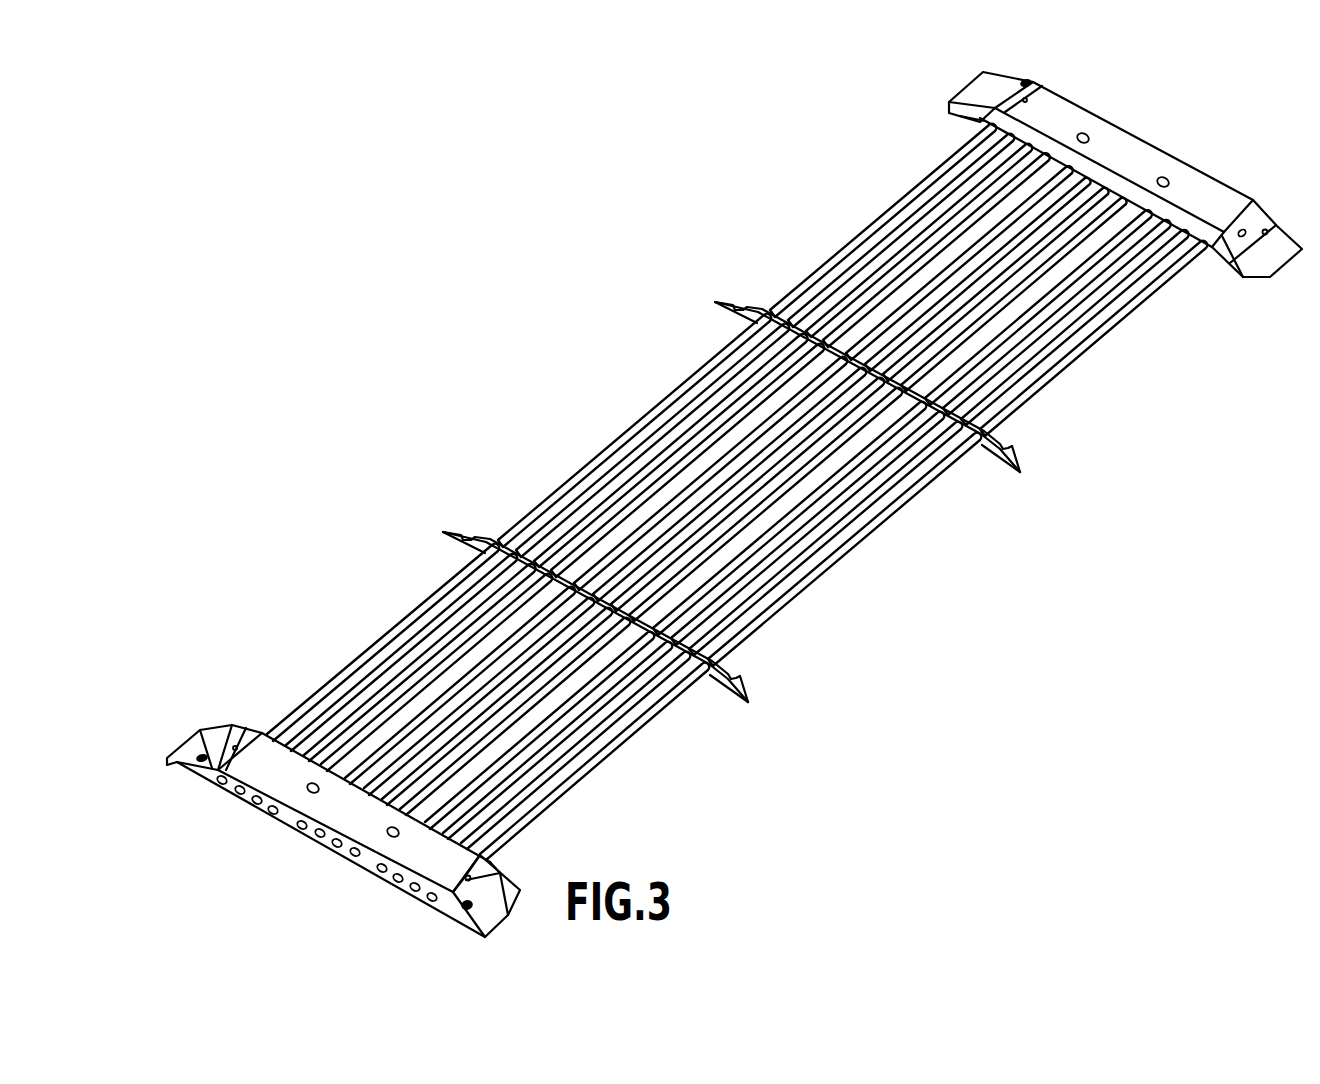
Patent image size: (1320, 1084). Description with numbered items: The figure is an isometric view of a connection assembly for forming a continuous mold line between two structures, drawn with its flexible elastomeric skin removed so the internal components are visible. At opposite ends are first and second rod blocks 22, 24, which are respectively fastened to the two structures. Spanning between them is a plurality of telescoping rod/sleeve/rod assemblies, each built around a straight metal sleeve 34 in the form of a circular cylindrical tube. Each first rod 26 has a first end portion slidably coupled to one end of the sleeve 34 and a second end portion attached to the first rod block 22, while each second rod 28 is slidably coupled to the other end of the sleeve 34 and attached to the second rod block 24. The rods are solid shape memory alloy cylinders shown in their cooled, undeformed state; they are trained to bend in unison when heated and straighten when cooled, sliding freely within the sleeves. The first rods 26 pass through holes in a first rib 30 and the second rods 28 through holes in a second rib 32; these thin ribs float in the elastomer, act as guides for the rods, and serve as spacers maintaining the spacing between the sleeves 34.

The first rod block 22 is at (348, 822).
The second rod block 24 is at (1118, 145).
The first rod 26 is at (402, 664).
The second rod 28 is at (1065, 345).
The first rib 30 is at (450, 530).
The second rib 32 is at (730, 302).
The sleeve 34 is at (808, 565).